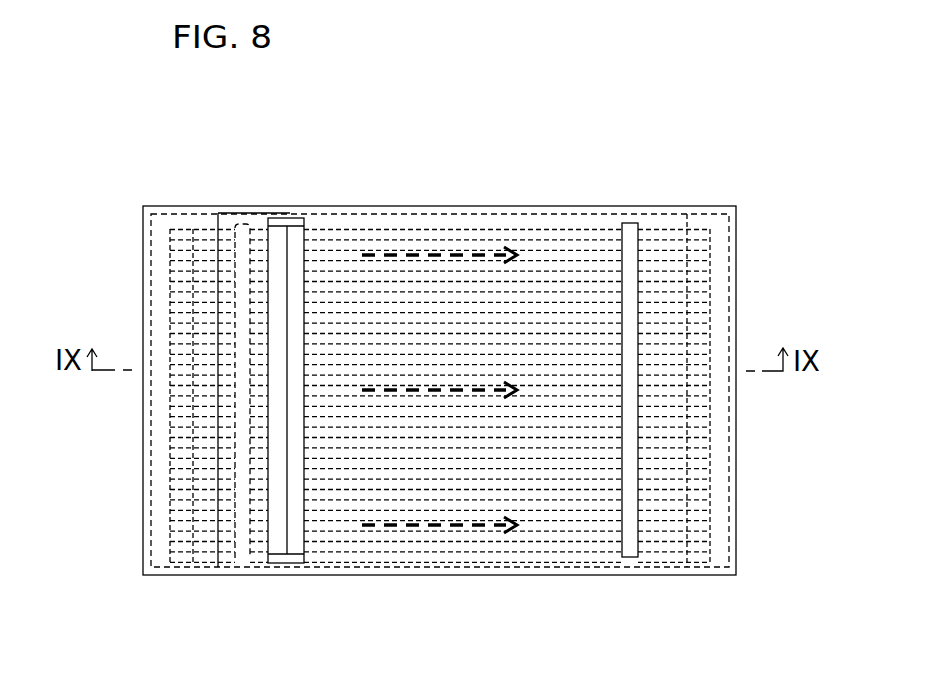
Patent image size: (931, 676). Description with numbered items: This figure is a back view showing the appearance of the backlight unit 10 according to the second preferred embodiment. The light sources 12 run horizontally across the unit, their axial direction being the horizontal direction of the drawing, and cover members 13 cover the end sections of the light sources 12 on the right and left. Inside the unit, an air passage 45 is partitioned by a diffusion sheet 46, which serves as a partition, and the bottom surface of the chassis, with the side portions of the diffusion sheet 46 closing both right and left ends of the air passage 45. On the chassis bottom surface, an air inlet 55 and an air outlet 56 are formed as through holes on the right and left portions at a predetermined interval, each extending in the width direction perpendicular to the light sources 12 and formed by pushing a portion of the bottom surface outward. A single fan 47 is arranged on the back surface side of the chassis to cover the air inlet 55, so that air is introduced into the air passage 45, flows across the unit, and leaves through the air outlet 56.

The backlight unit 10 is at (142, 132).
The light sources 12 is at (557, 228).
The cover members 13 is at (160, 213).
The air passage 45 is at (395, 218).
The diffusion sheet 46 is at (475, 203).
The fan 47 is at (296, 217).
The air inlet 55 is at (243, 543).
The air outlet 56 is at (630, 547).